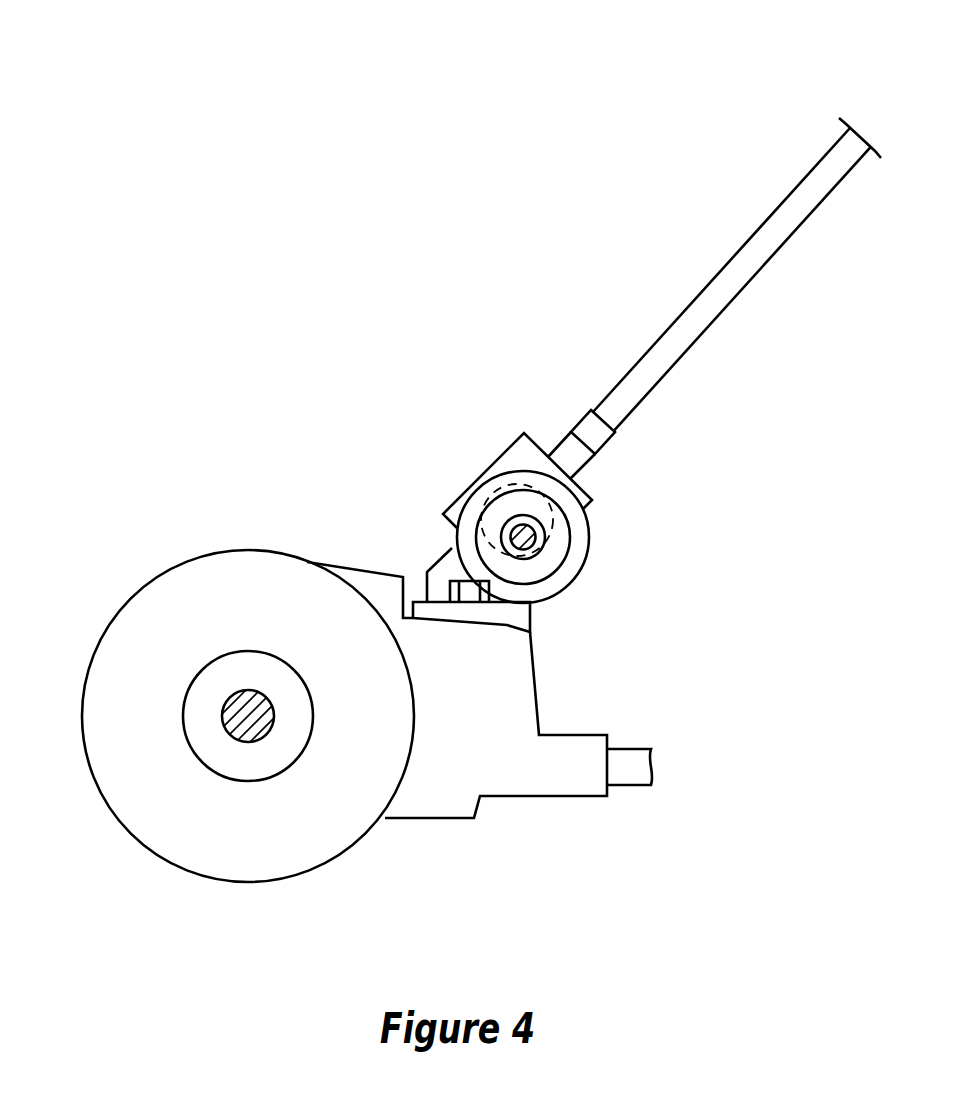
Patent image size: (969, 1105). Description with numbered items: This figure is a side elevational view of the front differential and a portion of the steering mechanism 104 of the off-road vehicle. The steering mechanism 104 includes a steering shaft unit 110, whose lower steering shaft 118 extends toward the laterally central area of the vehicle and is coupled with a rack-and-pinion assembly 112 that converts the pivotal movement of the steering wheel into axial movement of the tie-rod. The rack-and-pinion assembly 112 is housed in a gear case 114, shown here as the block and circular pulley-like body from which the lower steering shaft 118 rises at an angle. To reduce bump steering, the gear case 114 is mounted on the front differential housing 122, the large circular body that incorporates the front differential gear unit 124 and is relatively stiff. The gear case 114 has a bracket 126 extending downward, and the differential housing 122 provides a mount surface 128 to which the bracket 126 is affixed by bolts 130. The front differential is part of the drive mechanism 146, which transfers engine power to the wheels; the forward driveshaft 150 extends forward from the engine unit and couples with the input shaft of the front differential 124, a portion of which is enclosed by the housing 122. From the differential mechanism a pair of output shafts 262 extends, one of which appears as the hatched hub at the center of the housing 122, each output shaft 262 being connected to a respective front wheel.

The steering mechanism 104 is at (608, 292).
The steering shaft unit 110 is at (775, 195).
The lower steering shaft 118 is at (709, 282).
The gear case 114 is at (460, 484).
The rack-and-pinion assembly 112 is at (507, 497).
The front differential housing 122 is at (242, 547).
The front differential gear unit 124 is at (120, 600).
The output shaft 262 is at (233, 737).
The bolts 130 is at (427, 572).
The bracket 126 is at (441, 558).
The mount surface 128 is at (507, 624).
The drive mechanism 146 is at (778, 683).
The forward driveshaft 150 is at (628, 748).